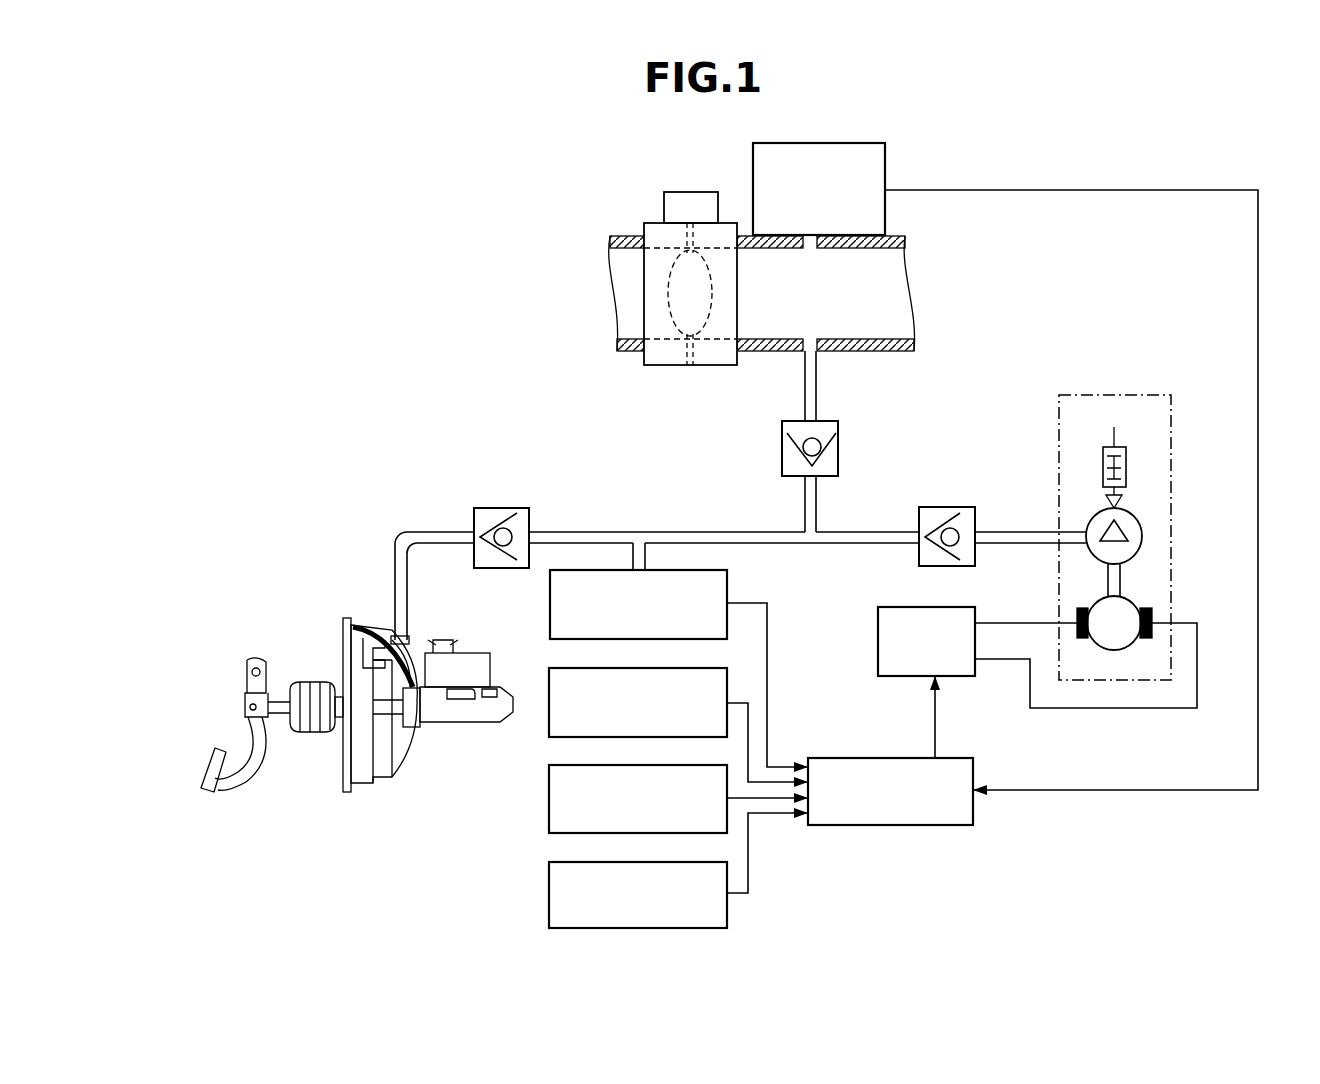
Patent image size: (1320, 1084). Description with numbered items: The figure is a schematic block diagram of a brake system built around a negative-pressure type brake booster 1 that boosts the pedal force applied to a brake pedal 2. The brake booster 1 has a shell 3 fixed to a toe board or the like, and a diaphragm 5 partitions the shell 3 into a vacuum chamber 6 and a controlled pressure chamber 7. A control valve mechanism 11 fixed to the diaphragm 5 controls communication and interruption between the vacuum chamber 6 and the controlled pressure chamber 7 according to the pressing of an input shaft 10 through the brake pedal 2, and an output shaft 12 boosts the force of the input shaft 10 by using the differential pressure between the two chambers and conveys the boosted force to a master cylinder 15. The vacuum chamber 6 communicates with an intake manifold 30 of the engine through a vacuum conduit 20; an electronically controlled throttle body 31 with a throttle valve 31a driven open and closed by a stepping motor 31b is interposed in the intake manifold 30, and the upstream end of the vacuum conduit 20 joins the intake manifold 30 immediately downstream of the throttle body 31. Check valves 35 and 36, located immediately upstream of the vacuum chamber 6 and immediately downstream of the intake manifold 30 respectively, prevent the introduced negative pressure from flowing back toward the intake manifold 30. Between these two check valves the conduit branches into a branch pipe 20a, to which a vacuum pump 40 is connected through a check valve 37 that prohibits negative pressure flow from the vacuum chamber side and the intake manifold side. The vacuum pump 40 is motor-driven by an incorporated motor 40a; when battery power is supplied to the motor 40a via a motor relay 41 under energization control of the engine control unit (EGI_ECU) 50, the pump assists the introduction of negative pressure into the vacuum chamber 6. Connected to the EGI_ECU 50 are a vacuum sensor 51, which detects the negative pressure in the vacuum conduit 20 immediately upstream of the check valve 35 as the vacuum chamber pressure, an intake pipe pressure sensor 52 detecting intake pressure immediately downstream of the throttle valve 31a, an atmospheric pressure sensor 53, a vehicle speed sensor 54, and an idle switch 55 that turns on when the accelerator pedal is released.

The negative-pressure type brake booster 1 is at (334, 726).
The brake pedal 2 is at (202, 770).
The shell 3 is at (362, 782).
The diaphragm 5 is at (380, 637).
The vacuum chamber 6 is at (413, 640).
The controlled pressure chamber 7 is at (353, 627).
The input shaft 10 is at (283, 717).
The control valve mechanism 11 is at (358, 685).
The output shaft 12 is at (385, 712).
The master cylinder 15 is at (455, 735).
The vacuum conduit 20 is at (427, 530).
The branch pipe 20a is at (847, 544).
The intake manifold 30 is at (873, 353).
The electronically controlled throttle body 31 is at (667, 368).
The throttle valve 31a is at (707, 322).
The stepping motor 31b is at (690, 192).
The check valve 35 is at (503, 508).
The check valve 36 is at (840, 445).
The check valve 37 is at (949, 507).
The vacuum pump 40 is at (1171, 434).
The motor 40a is at (1128, 597).
The motor relay 41 is at (878, 640).
The engine control unit (EGI_ECU) 50 is at (888, 826).
The vacuum sensor 51 is at (550, 608).
The intake pipe pressure sensor 52 is at (886, 164).
The atmospheric pressure sensor 53 is at (549, 728).
The vehicle speed sensor 54 is at (549, 800).
The idle switch 55 is at (549, 893).